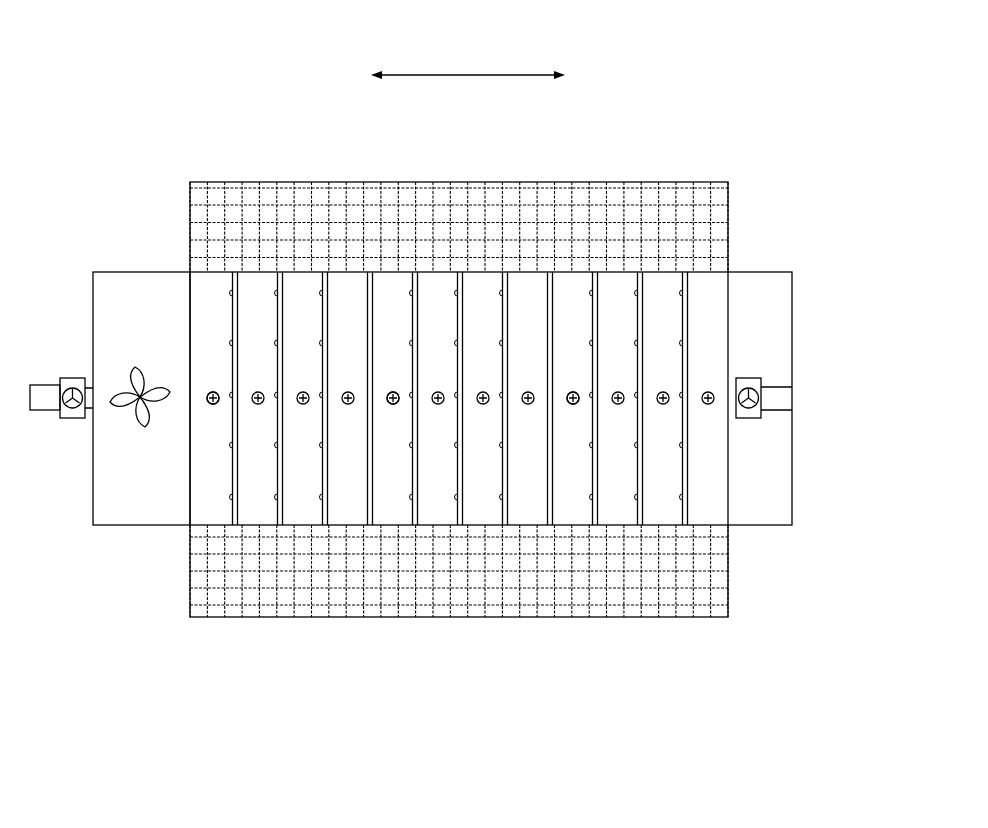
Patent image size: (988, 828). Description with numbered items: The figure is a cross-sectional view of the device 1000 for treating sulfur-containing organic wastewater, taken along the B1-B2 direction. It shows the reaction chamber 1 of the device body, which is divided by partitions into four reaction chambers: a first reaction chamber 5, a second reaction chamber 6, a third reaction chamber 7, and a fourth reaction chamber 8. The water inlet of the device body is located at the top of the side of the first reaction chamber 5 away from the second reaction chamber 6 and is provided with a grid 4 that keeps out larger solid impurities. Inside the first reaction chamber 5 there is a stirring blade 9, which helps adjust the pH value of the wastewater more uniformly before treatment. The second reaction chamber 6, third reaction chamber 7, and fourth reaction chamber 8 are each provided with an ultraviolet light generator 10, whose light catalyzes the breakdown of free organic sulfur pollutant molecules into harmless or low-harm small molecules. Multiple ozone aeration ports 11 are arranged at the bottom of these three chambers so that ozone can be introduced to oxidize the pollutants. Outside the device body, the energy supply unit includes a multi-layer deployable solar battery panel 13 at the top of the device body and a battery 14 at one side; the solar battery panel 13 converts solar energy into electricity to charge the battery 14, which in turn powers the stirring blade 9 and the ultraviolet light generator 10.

The device for treating sulfur-containing organic wastewater 1000 is at (176, 178).
The reaction chamber 1 is at (620, 317).
The grid 4 is at (93, 525).
The first reaction chamber 5 is at (116, 343).
The second reaction chamber 6 is at (212, 345).
The third reaction chamber 7 is at (392, 343).
The fourth reaction chamber 8 is at (570, 345).
The stirring blade 9 is at (142, 398).
The ultraviolet light generator 10 is at (318, 525).
The ozone aeration port 11 is at (213, 398).
The solar battery panel 13 is at (640, 565).
The battery 14 is at (753, 460).